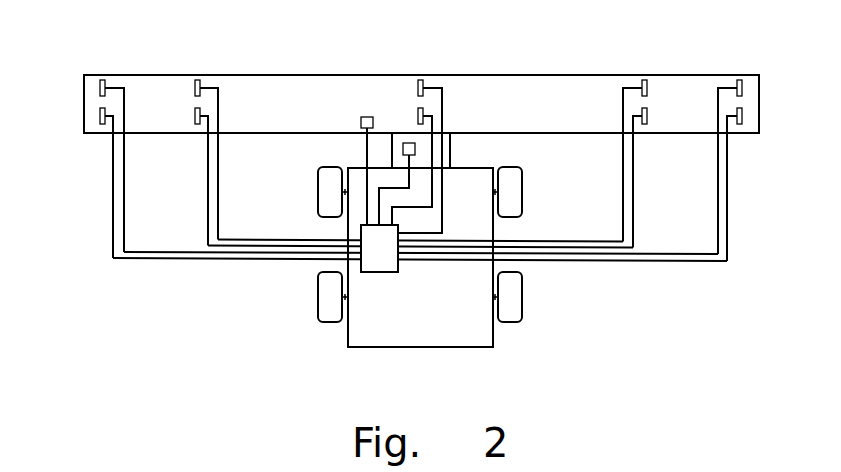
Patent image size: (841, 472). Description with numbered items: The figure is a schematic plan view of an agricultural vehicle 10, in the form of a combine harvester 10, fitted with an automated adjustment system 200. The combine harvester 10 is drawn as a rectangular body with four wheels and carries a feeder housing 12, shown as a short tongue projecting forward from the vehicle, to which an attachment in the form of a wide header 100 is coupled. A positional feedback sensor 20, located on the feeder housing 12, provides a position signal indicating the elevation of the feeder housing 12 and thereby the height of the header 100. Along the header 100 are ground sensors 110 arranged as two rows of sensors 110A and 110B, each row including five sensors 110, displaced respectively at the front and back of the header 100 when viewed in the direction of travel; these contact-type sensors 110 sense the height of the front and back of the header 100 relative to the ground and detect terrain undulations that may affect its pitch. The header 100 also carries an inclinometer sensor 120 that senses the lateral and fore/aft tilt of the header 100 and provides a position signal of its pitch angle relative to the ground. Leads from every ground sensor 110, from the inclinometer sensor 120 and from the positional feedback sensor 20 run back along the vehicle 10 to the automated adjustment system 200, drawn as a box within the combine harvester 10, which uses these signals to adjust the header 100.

The header 100 is at (513, 80).
The ground sensors 110 is at (197, 79).
The row of sensors 110A is at (78, 88).
The row of sensors 110B is at (78, 117).
The inclinometer sensor 120 is at (361, 122).
The positional feedback sensor 20 is at (405, 143).
The feeder housing 12 is at (452, 148).
The agricultural vehicle 10 is at (473, 348).
The automated adjustment system 200 is at (385, 267).